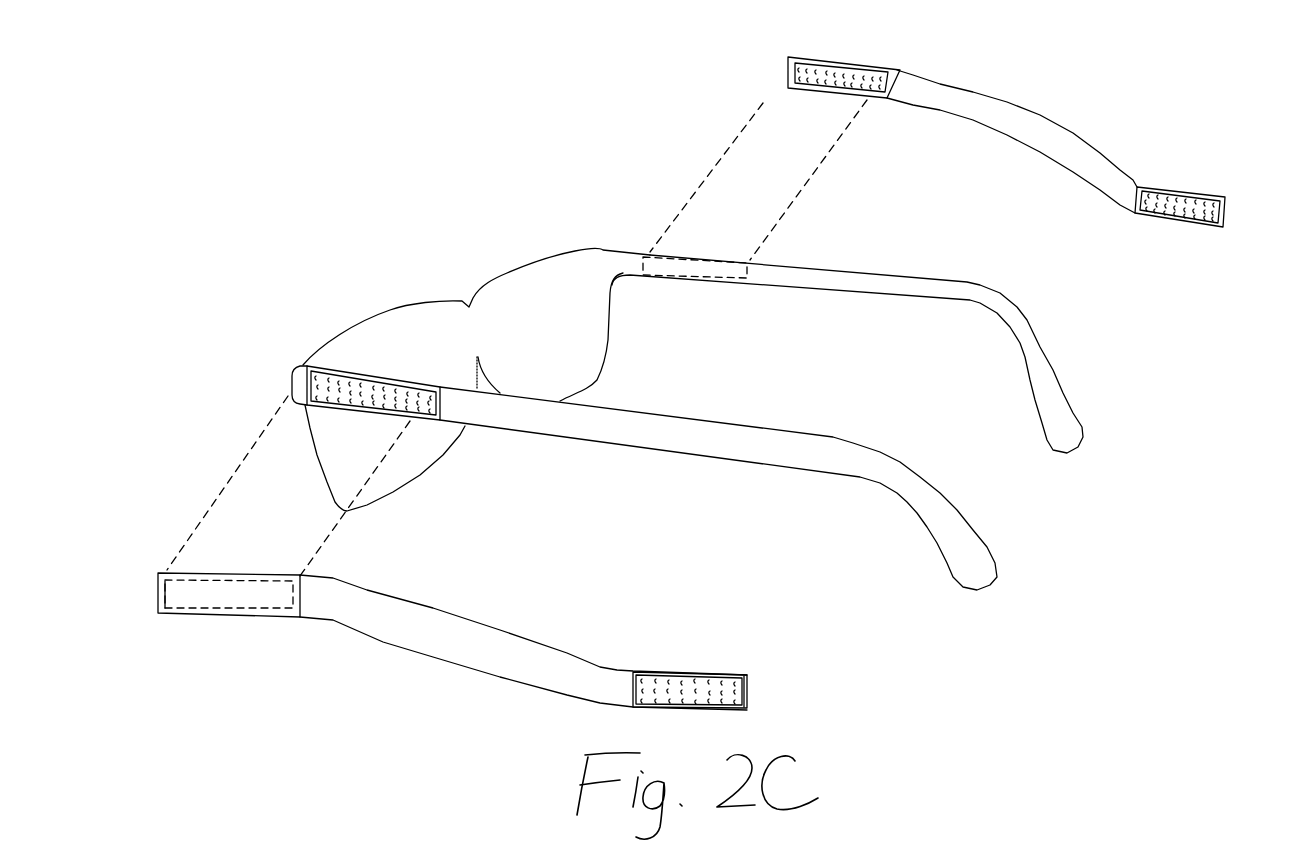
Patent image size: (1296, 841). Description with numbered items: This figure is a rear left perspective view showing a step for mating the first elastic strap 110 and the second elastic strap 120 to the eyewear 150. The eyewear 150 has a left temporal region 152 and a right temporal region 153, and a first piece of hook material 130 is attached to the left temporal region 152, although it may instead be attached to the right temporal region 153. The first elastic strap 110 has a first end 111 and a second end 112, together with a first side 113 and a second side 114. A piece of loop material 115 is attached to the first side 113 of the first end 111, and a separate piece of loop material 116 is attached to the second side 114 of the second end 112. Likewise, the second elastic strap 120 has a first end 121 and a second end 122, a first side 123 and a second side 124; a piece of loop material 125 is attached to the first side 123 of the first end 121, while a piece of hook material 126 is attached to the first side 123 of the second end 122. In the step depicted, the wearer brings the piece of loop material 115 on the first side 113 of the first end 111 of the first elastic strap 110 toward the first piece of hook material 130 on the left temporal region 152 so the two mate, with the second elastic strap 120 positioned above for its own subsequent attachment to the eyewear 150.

The first elastic strap 110 is at (433, 648).
The first end 111 is at (158, 573).
The first side 113 is at (158, 593).
The piece of loop material 115 is at (160, 614).
The second end 112 is at (747, 675).
The second side 114 is at (747, 693).
The piece of loop material 116 is at (747, 710).
The second elastic strap 120 is at (990, 102).
The first end 121 is at (788, 57).
The first side 123 is at (787, 78).
The piece of loop material 125 is at (788, 87).
The second end 122 is at (1225, 197).
The second side 124 is at (1225, 209).
The piece of hook material 126 is at (1223, 229).
The first piece of hook material 130 is at (303, 364).
The eyewear 150 is at (430, 298).
The left temporal region 152 is at (570, 427).
The right temporal region 153 is at (827, 277).